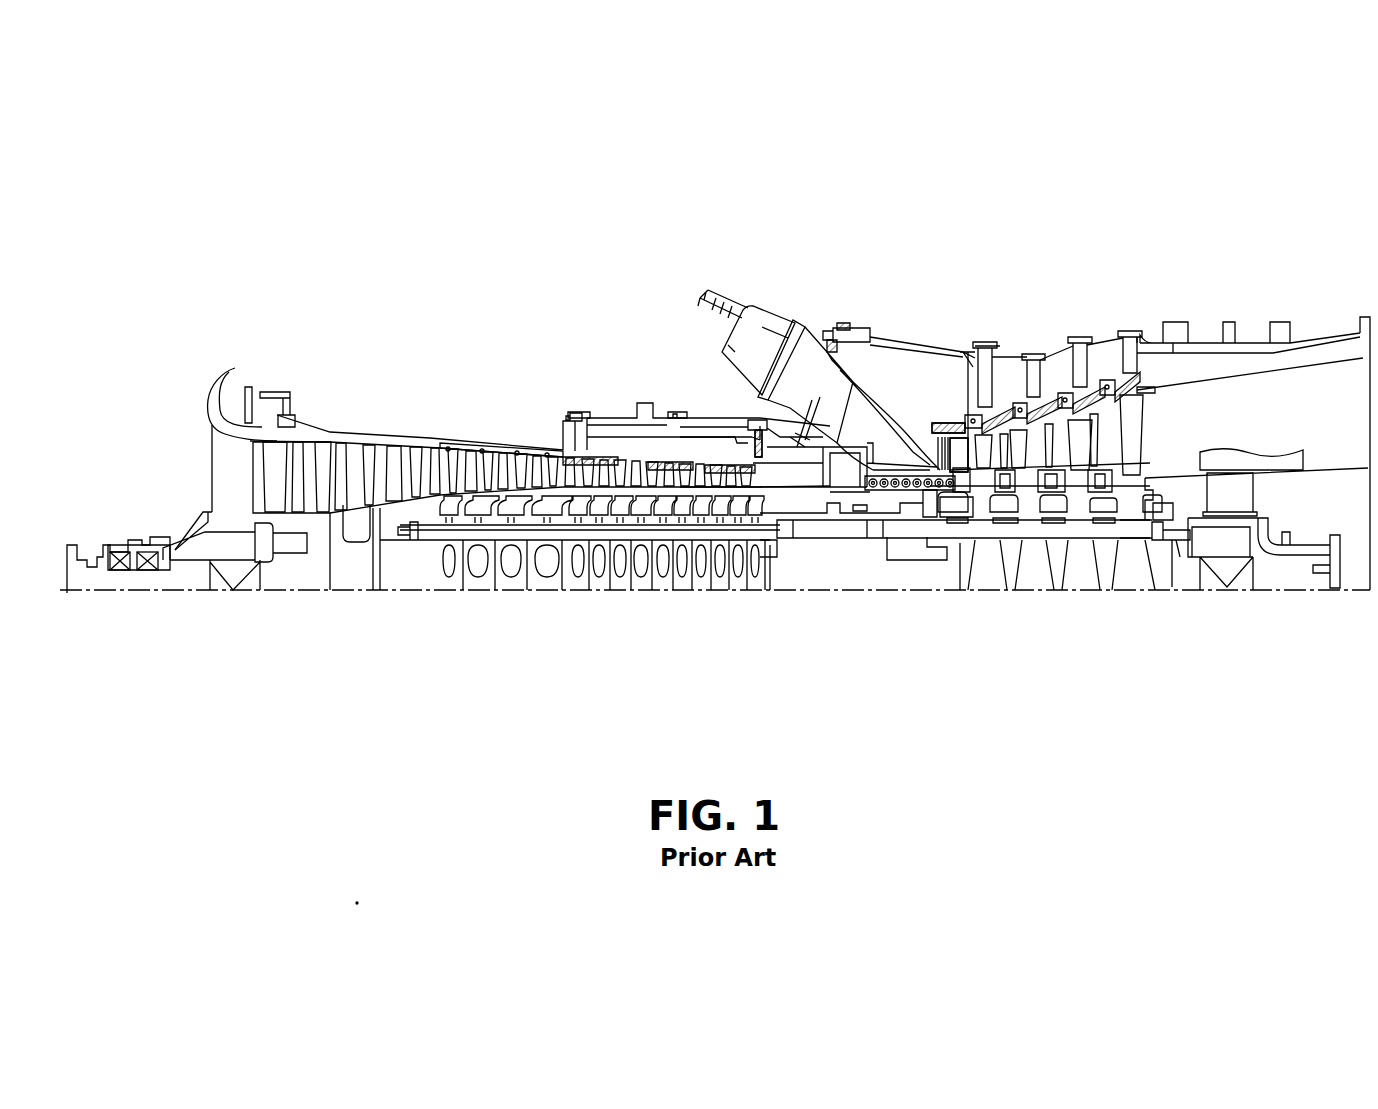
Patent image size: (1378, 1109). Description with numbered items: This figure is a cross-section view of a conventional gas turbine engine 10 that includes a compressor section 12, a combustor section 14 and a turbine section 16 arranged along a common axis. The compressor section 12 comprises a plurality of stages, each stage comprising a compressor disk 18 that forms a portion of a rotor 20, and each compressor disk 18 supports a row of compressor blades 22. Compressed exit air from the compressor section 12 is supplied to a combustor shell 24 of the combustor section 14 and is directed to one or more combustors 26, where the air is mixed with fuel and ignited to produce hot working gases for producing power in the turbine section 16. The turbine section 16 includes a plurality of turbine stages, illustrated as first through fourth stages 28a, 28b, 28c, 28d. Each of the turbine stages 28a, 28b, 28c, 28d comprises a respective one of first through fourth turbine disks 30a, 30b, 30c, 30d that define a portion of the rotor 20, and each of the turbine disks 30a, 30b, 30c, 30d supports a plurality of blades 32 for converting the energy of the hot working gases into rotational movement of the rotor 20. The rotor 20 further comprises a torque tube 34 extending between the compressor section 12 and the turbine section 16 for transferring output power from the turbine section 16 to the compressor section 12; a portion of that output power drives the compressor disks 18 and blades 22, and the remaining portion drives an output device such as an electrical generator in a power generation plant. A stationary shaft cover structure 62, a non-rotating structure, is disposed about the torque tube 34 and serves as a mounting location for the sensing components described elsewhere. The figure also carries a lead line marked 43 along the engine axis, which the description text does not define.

The gas turbine engine 10 is at (588, 236).
The compressor section 12 is at (453, 370).
The combustor section 14 is at (857, 260).
The turbine section 16 is at (1122, 224).
The compressor disk 18 is at (537, 520).
The rotor 20 is at (1130, 600).
The compressor blades 22 is at (430, 463).
The combustor shell 24 is at (897, 362).
The combustors 26 is at (763, 312).
The first turbine stage 28a is at (966, 408).
The second turbine stage 28b is at (1017, 396).
The third turbine stage 28c is at (1055, 382).
The fourth turbine stage 28d is at (1121, 360).
The first turbine disk 30a is at (990, 580).
The second turbine disk 30b is at (1028, 578).
The third turbine disk 30c is at (1085, 578).
The fourth turbine disk 30d is at (1140, 578).
The blades 32 is at (1027, 450).
The torque tube 34 is at (893, 540).
The engine centerline axis 43 is at (750, 598).
The stationary shaft cover structure 62 is at (877, 488).